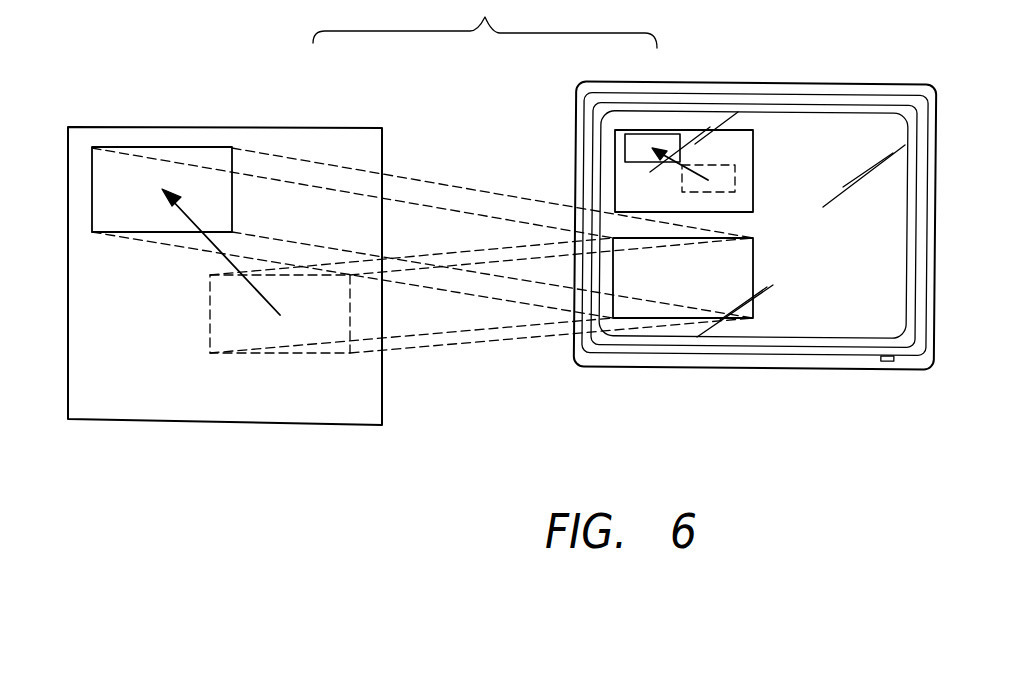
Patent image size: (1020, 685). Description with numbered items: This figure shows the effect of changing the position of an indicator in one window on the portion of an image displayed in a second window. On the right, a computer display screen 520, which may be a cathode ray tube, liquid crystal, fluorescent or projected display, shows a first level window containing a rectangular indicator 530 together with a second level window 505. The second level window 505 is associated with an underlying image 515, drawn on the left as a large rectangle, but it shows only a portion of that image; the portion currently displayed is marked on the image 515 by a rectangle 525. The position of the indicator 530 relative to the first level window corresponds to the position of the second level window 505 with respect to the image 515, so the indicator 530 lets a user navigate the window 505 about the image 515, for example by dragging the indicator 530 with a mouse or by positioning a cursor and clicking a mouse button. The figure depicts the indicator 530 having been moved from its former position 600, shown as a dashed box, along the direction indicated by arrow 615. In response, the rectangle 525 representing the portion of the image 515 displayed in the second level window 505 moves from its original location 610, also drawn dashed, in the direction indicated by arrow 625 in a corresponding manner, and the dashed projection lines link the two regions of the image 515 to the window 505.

The window 505 is at (753, 253).
The image 515 is at (253, 249).
The display screen 520 is at (716, 267).
The rectangle 525 is at (138, 127).
The indicator 530 is at (625, 145).
The former position 600 is at (735, 182).
The original location 610 is at (277, 353).
The arrow 615 is at (695, 165).
The arrow 625 is at (223, 260).